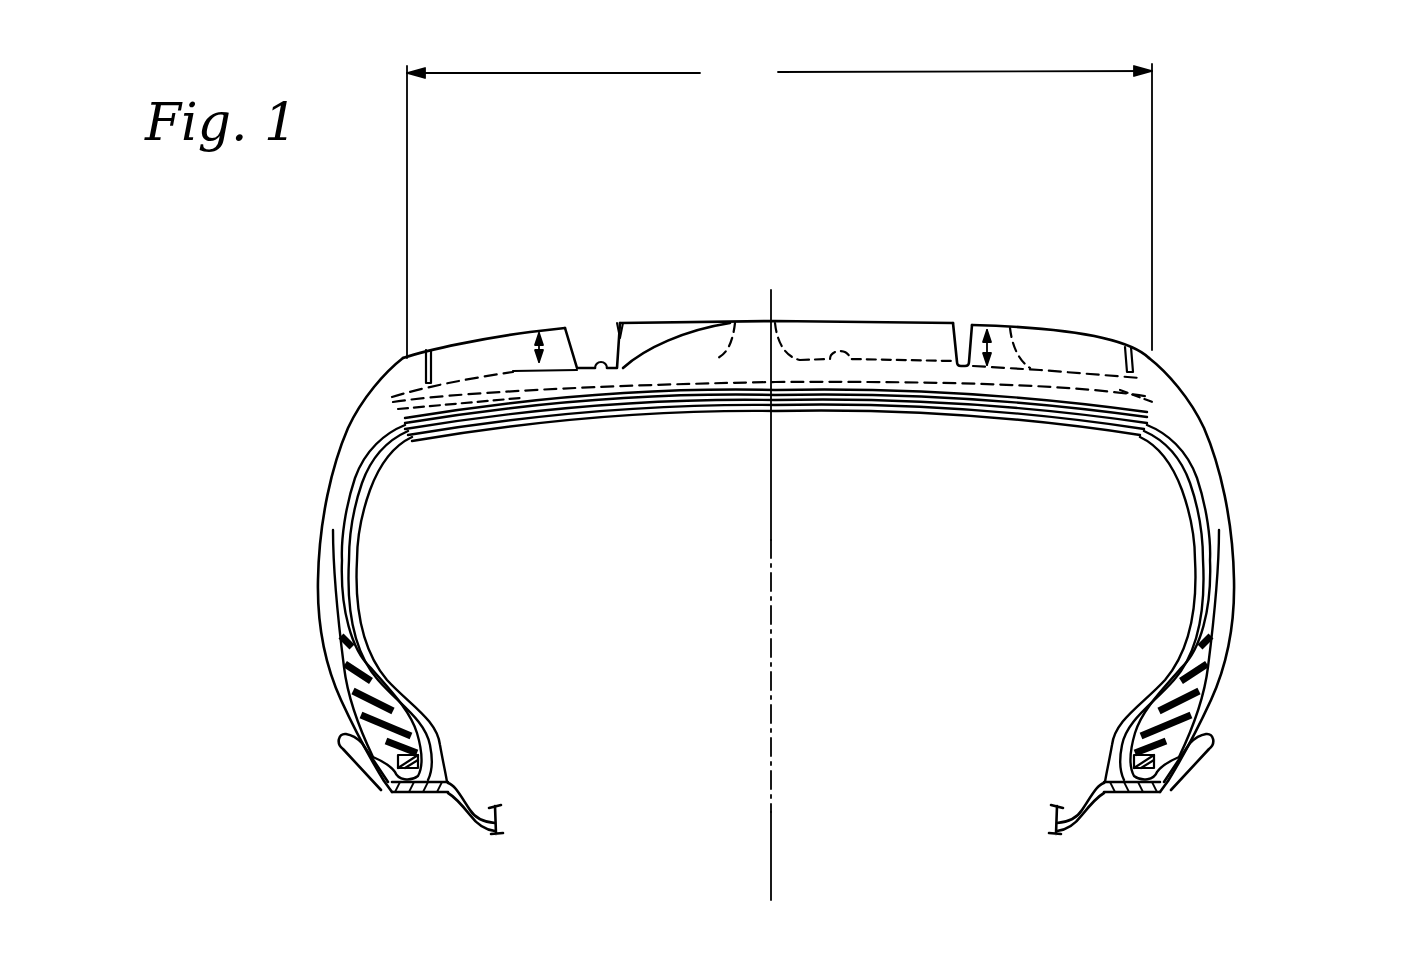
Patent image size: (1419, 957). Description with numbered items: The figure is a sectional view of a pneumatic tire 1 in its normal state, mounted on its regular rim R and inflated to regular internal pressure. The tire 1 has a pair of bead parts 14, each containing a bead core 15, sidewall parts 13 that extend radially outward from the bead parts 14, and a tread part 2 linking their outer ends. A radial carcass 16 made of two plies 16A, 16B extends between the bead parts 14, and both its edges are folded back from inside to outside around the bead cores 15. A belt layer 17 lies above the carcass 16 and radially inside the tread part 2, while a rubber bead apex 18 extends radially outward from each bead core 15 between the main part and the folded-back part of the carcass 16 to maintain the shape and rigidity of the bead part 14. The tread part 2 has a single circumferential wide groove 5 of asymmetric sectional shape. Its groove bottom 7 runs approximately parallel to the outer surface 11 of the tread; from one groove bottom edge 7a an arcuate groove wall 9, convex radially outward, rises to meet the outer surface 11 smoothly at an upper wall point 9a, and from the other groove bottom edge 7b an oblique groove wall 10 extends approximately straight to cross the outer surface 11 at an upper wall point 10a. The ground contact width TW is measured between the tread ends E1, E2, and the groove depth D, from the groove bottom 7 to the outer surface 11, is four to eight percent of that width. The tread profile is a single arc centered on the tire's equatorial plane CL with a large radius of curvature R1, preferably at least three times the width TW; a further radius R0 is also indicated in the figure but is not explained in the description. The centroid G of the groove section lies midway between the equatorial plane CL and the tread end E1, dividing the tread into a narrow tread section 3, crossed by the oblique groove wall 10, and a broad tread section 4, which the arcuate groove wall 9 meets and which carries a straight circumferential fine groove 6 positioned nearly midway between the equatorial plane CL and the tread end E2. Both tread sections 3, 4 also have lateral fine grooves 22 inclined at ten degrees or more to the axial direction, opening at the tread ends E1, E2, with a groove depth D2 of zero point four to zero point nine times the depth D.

The tire 1 is at (1185, 268).
The tread part 2 is at (776, 311).
The narrow tread section 3 is at (487, 333).
The broad tread section 4 is at (1070, 333).
The circumferential wide groove 5 is at (620, 322).
The fine groove 6 is at (964, 316).
The groove bottom 7 is at (773, 453).
The groove bottom edge 7a is at (613, 372).
The groove bottom edge 7b is at (577, 372).
The arcuate groove wall 9 is at (687, 343).
The upper wall point 9a is at (768, 323).
The oblique groove wall 10 is at (561, 286).
The upper wall point 10a is at (577, 362).
The outer surface 11 is at (876, 320).
The sidewall parts 13 is at (308, 498).
The bead parts 14 is at (323, 738).
The bead core 15 is at (408, 776).
The radial carcass 16 is at (867, 603).
The carcass ply 16A is at (1212, 555).
The carcass ply 16B is at (1213, 530).
The belt layer 17 is at (1120, 400).
The rubber bead apex 18 is at (356, 669).
The lateral fine grooves 22 is at (851, 352).
The regular rim R is at (1082, 810).
The tire's equatorial plane CL is at (770, 822).
The ground contact width TW is at (779, 209).
The groove depth D is at (535, 350).
The groove depth D2 is at (988, 348).
The tread end E1 is at (422, 352).
The tread end E2 is at (1152, 350).
The centroid of the groove sectional shape G is at (607, 347).
The tread profile radius R0 is at (766, 523).
The radius of curvature R1 is at (774, 865).